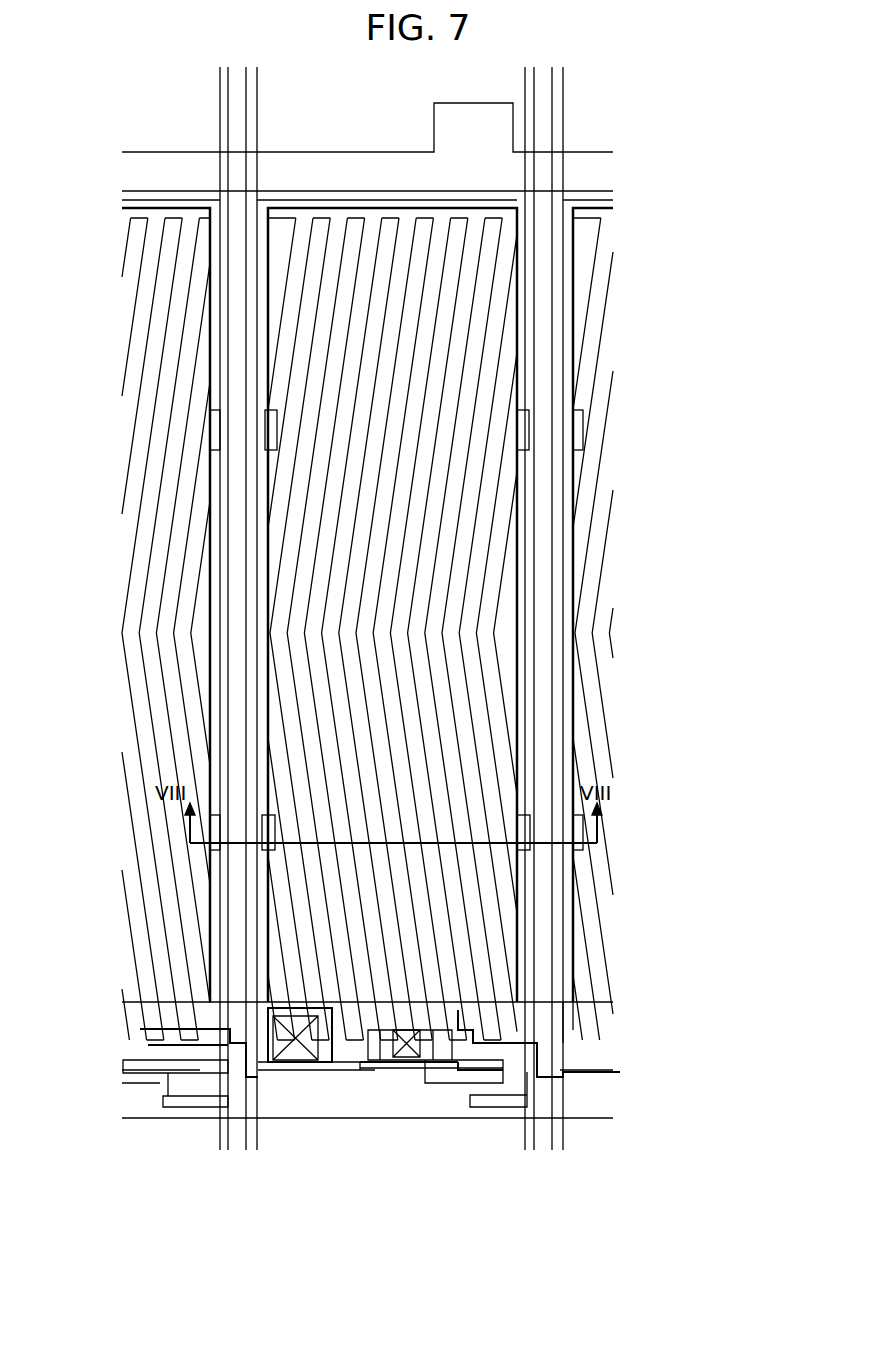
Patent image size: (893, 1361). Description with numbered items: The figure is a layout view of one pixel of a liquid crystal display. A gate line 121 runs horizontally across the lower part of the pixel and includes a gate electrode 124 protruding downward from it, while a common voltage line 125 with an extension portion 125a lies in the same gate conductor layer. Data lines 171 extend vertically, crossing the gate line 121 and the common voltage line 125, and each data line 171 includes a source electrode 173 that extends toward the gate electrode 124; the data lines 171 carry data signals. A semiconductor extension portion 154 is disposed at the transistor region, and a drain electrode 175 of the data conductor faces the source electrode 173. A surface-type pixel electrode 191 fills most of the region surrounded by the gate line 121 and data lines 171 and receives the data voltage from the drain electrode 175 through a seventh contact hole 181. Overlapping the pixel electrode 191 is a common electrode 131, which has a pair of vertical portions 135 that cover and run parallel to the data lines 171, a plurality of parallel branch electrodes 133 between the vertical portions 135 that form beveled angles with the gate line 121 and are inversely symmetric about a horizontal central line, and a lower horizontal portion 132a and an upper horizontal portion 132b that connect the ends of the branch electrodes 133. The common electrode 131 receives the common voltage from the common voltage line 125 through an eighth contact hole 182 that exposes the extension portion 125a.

The gate line 121 is at (595, 1118).
The gate electrode 124 is at (540, 1052).
The common voltage line 125 is at (570, 1025).
The extension portion 125a is at (275, 1080).
The common electrode 131 is at (404, 636).
The lower horizontal portion 132a is at (415, 1078).
The upper horizontal portion 132b is at (353, 205).
The branch electrode 133 is at (525, 330).
The vertical portion 135 is at (525, 432).
The extension portion 154 is at (448, 1092).
The data line 171 is at (535, 128).
The source electrode 173 is at (535, 1112).
The drain electrode 175 is at (487, 1085).
The seventh contact hole 181 is at (390, 1066).
The eighth contact hole 182 is at (300, 1062).
The pixel electrode 191 is at (150, 205).